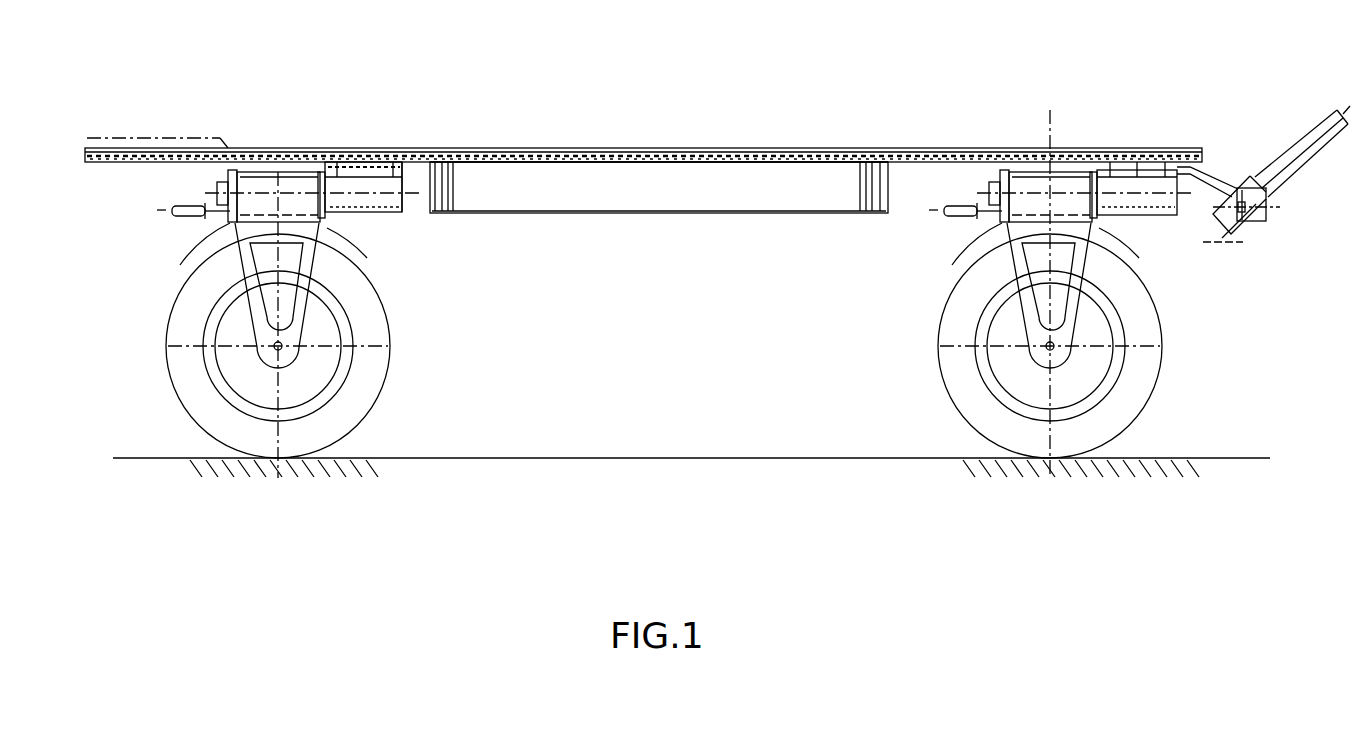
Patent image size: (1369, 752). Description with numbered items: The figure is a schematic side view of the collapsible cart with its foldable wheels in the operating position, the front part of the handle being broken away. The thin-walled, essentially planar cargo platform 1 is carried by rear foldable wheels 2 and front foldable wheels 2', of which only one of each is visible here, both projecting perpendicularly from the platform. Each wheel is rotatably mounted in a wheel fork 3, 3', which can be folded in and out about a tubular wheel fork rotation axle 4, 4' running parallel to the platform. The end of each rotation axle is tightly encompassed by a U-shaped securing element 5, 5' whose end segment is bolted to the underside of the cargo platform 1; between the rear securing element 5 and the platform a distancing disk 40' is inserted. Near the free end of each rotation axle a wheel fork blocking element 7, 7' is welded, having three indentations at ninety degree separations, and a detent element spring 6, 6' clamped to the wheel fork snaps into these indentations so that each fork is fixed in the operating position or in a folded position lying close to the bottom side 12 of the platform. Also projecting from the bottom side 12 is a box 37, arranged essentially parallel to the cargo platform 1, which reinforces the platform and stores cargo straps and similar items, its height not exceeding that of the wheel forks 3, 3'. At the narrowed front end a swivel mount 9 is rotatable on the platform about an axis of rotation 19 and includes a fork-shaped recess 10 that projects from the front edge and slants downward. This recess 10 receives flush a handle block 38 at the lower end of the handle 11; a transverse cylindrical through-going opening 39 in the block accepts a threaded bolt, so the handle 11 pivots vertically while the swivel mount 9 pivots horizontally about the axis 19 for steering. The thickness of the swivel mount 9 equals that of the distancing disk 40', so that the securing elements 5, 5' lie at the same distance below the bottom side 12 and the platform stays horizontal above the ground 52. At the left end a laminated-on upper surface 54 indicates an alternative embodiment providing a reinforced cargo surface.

The cargo platform 1 is at (766, 150).
The rear foldable wheel 2 is at (299, 325).
The front foldable wheel 2' is at (1063, 348).
The wheel fork 3 is at (306, 270).
The wheel fork 3' is at (1078, 270).
The wheel fork rotation axle 4 is at (286, 189).
The wheel fork rotation axle 4' is at (1065, 192).
The securing element 5 is at (369, 227).
The securing element 5' is at (1139, 222).
The detent element spring 6 is at (174, 231).
The detent element 6' is at (945, 240).
The wheel fork blocking element 7 is at (262, 258).
The wheel fork blocking element 7' is at (1028, 268).
The swivel mount 9 is at (1210, 168).
The recess 10 is at (1212, 211).
The handle 11 is at (1288, 176).
The bottom side 12 is at (678, 162).
The axis of rotation 19 is at (1050, 146).
The box 37 is at (800, 206).
The handle block 38 is at (1236, 232).
The through-going opening 39 is at (1266, 204).
The distancing disk 40' is at (445, 212).
The ground 52 is at (738, 452).
The laminated-on upper surface 54 is at (154, 138).